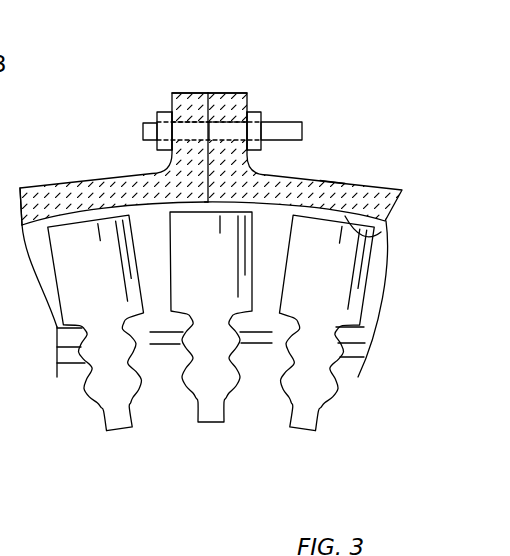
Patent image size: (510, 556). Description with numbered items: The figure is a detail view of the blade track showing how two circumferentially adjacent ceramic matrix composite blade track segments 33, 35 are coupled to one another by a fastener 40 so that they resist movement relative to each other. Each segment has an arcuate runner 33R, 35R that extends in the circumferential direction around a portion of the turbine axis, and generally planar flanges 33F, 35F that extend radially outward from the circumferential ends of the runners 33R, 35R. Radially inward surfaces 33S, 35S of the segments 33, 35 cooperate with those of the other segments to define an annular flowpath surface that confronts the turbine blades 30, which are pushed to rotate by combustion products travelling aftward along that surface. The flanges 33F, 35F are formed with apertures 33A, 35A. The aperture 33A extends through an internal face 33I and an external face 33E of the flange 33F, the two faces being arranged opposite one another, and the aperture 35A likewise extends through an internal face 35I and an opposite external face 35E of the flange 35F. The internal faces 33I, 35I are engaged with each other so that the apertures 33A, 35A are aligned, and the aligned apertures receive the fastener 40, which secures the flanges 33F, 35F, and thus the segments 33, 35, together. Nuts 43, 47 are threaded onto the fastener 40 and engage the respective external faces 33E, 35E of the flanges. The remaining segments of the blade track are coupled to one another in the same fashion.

The blades 30 is at (225, 260).
The blade track segment 33 is at (362, 204).
The aperture 33A is at (240, 110).
The external face 33E is at (256, 123).
The flange 33F is at (235, 90).
The internal face 33I is at (215, 128).
The arcuate runner 33R is at (333, 192).
The radially inward surface 33S is at (405, 240).
The blade track segment 35 is at (54, 193).
The aperture 35A is at (188, 114).
The external face 35E is at (156, 144).
The flange 35F is at (172, 90).
The internal face 35I is at (206, 124).
The arcuate runner 35R is at (33, 201).
The radially inward surface 35S is at (88, 214).
The fastener 40 is at (288, 131).
The nut 43 is at (143, 126).
The nut 47 is at (263, 149).